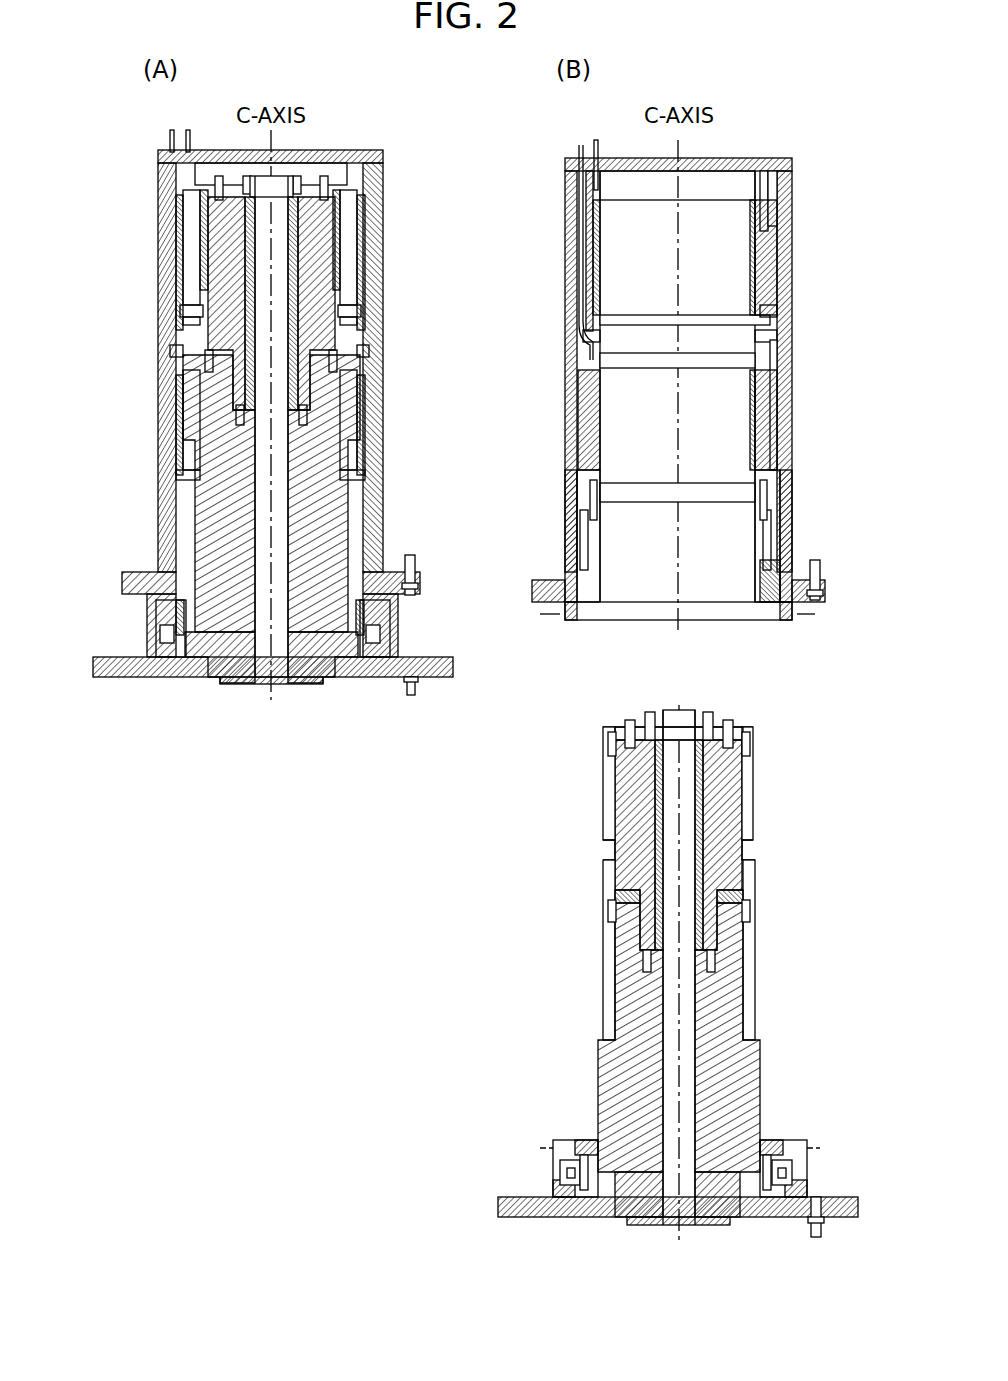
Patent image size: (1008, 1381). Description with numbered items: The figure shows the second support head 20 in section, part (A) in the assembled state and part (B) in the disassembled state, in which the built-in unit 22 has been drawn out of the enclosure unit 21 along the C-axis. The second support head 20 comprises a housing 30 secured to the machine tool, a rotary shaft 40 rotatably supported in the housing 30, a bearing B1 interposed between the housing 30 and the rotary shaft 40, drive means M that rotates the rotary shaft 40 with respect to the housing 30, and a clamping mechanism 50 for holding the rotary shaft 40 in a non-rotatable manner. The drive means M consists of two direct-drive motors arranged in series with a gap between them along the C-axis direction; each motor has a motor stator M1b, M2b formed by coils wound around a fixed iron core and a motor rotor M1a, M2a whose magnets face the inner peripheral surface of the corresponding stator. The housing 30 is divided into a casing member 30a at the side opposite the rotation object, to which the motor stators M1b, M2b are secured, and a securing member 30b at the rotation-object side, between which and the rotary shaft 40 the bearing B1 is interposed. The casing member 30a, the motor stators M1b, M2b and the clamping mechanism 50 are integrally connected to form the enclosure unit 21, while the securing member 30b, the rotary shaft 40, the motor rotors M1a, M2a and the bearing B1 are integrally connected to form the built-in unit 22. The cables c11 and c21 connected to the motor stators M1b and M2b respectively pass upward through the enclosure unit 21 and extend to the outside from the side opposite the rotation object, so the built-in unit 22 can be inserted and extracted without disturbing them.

The second support head 20 is at (352, 98).
The housing 30 is at (150, 212).
The drive means M is at (185, 403).
The rotary shaft 40 is at (193, 483).
The enclosure unit 21 is at (560, 425).
The cables c11 is at (592, 138).
The cables c21 is at (578, 153).
The motor stator M1b is at (762, 270).
The motor stator M2b is at (760, 447).
The casing member 30a is at (562, 547).
The clamping mechanism 50 is at (778, 552).
The built-in unit 22 is at (602, 917).
The motor rotor M1a is at (612, 783).
The motor rotor M2a is at (610, 970).
The securing member 30b is at (558, 1140).
The bearing B1 is at (575, 1172).